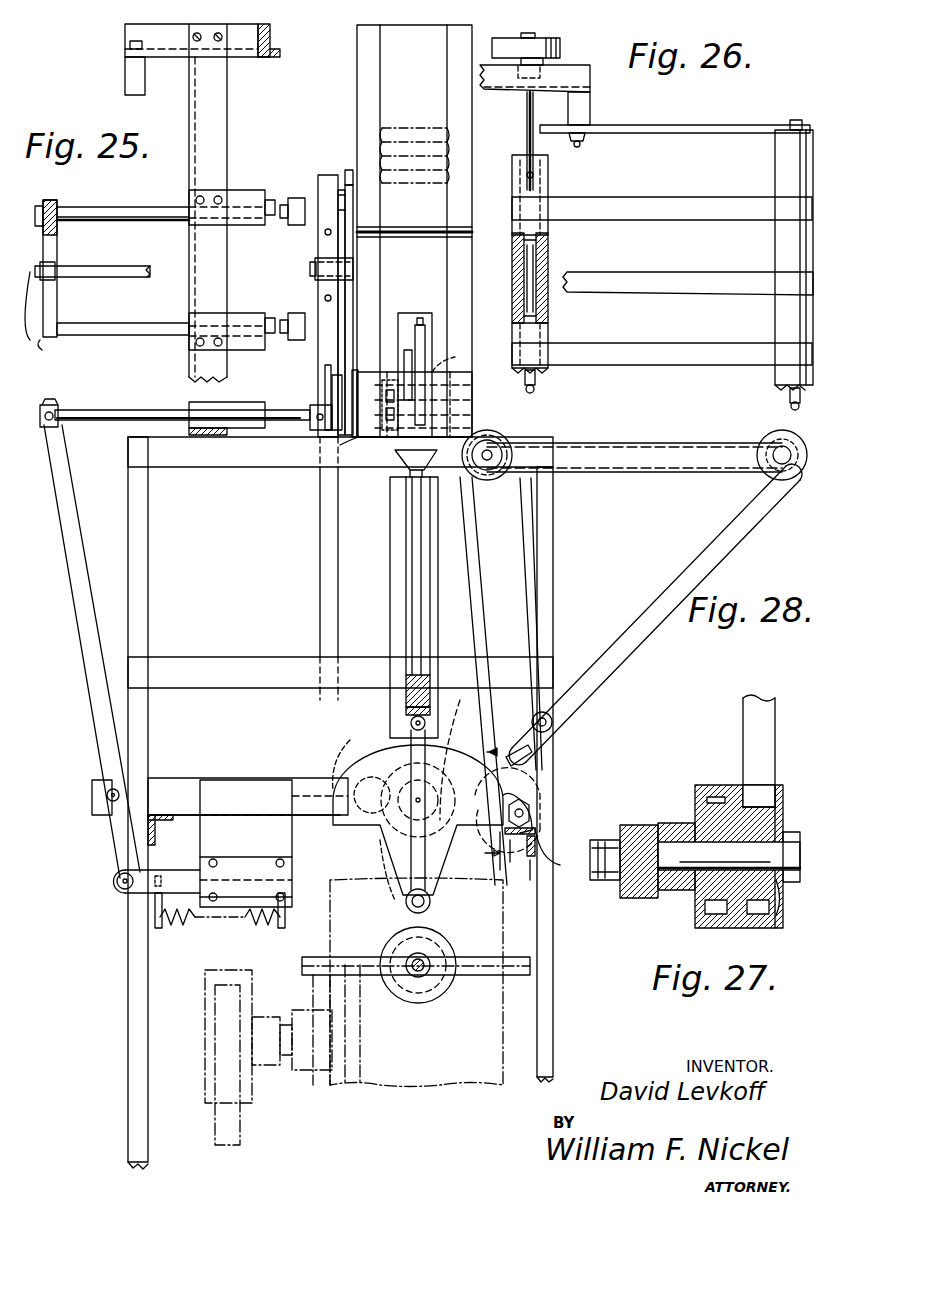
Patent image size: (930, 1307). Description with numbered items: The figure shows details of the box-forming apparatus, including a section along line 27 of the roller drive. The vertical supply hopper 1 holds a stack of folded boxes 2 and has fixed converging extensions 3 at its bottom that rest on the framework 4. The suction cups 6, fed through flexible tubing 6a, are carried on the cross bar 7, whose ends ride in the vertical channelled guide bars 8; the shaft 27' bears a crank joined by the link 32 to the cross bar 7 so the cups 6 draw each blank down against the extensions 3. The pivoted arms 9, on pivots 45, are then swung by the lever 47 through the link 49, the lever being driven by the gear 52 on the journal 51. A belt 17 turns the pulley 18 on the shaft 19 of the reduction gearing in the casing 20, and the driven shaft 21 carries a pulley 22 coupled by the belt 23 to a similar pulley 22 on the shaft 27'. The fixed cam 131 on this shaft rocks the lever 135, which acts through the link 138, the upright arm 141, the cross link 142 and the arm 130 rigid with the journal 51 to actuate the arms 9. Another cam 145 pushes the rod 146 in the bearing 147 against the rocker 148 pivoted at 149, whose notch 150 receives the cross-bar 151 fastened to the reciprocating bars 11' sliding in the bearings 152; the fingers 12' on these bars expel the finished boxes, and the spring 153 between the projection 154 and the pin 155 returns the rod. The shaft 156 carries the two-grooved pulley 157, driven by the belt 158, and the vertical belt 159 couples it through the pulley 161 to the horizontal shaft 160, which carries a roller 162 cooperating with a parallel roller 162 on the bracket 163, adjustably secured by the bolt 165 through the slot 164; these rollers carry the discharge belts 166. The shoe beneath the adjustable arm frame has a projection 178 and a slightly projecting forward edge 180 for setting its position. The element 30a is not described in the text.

In FIG. 25, the vertical supply hopper 1 is at (357, 42).
In FIG. 25, the folded boxes 2 is at (395, 128).
In FIG. 28, the folded boxes 2 is at (528, 522).
In FIG. 25, the converging extensions 3 is at (432, 222).
In FIG. 25, the framework 4 is at (148, 545).
In FIG. 25, the suction cups 6 is at (395, 468).
In FIG. 25, the flexible tubing 6a is at (418, 567).
In FIG. 25, the cross bar 7 is at (406, 698).
In FIG. 25, the vertical channelled guide bars 8 is at (390, 617).
In FIG. 25, the pivoted arms 9 is at (432, 318).
In FIG. 25, the reciprocating bars 11' is at (182, 345).
In FIG. 25, the fingers 12' is at (307, 281).
In FIG. 25, the belt 17 is at (215, 1118).
In FIG. 25, the pulley 18 is at (252, 1103).
In FIG. 25, the shaft 19 is at (285, 1060).
In FIG. 25, the casing 20 is at (468, 1090).
In FIG. 25, the driven shaft 21 is at (415, 975).
In FIG. 25, the pulley 22 is at (435, 1030).
In FIG. 25, the belt 23 is at (462, 938).
In FIG. 25, the section line 27 is at (499, 804).
In FIG. 25, the shaft 27' is at (364, 808).
In FIG. 25, the arm 30a is at (363, 830).
In FIG. 25, the link 32 is at (380, 803).
In FIG. 25, the pivots 45 is at (455, 357).
In FIG. 25, the lever 47 is at (400, 452).
In FIG. 25, the link 49 is at (412, 330).
In FIG. 25, the journal 51 is at (455, 405).
In FIG. 25, the gear 52 is at (368, 437).
In FIG. 25, the arm 130 is at (332, 378).
In FIG. 25, the fixed cam 131 is at (380, 755).
In FIG. 25, the lever 135 is at (335, 278).
In FIG. 25, the link 138 is at (352, 300).
In FIG. 25, the upright arm 141 is at (340, 185).
In FIG. 25, the cross link 142 is at (300, 180).
In FIG. 25, the cam 145 is at (380, 870).
In FIG. 25, the rod 146 is at (178, 880).
In FIG. 25, the bearing 147 is at (290, 860).
In FIG. 25, the rocker 148 is at (100, 278).
In FIG. 25, the pivot 149 is at (107, 798).
In FIG. 25, the notch 150 is at (52, 405).
In FIG. 25, the cross-bar 151 is at (57, 248).
In FIG. 25, the bearings 152 is at (255, 222).
In FIG. 25, the spring 153 is at (185, 917).
In FIG. 25, the projection 154 is at (275, 915).
In FIG. 25, the pin 155 is at (160, 928).
In FIG. 25, the shaft 156 is at (33, 300).
In FIG. 27, the shaft 156 is at (690, 848).
In FIG. 25, the pulley 157 is at (548, 850).
In FIG. 27, the pulley 157 is at (698, 790).
In FIG. 25, the belt 158 is at (455, 868).
In FIG. 27, the belt 158 is at (715, 928).
In FIG. 25, the vertical belt 159 is at (466, 594).
In FIG. 26, the vertical belt 159 is at (560, 48).
In FIG. 27, the vertical belt 159 is at (782, 732).
In FIG. 28, the horizontal shaft 160 is at (500, 440).
In FIG. 25, the pulley 161 is at (493, 480).
In FIG. 26, the pulley 161 is at (548, 40).
In FIG. 28, the roller 162 is at (785, 445).
In FIG. 26, the roller 162 is at (775, 163).
In FIG. 28, the bracket 163 is at (640, 628).
In FIG. 26, the bracket 163 is at (672, 135).
In FIG. 28, the slot 164 is at (560, 705).
In FIG. 26, the slot 164 is at (580, 147).
In FIG. 28, the bolt 165 is at (555, 725).
In FIG. 28, the discharge belts 166 is at (662, 475).
In FIG. 26, the discharge belts 166 is at (700, 278).
In FIG. 25, the projection 178 is at (340, 448).
In FIG. 25, the forward edge 180 is at (375, 468).